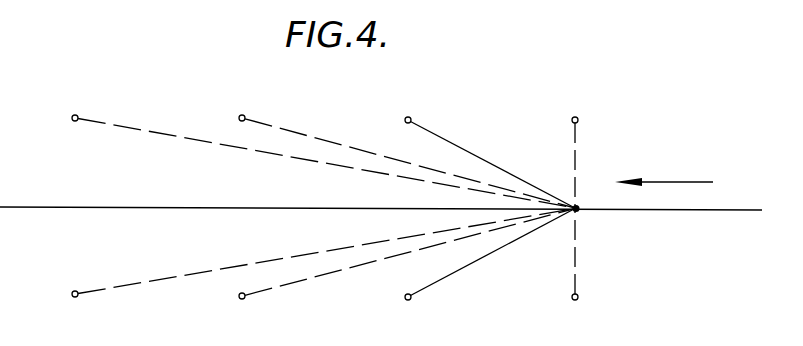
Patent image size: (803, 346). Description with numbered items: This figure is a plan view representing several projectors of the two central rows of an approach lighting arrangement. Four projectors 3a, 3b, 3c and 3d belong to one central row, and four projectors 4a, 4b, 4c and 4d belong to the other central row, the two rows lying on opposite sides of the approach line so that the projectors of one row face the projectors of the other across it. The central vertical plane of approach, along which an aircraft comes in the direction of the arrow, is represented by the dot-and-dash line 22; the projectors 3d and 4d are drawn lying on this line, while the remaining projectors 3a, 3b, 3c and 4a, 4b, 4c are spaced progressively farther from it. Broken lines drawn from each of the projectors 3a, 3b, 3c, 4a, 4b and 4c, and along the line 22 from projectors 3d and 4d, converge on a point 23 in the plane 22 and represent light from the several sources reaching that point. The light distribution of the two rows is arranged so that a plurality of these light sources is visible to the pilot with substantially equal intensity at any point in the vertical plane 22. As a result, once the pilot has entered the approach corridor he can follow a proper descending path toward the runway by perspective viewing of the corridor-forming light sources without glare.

The projector 3a is at (76, 115).
The projector 3b is at (242, 115).
The projector 3c is at (408, 117).
The projector 3d is at (576, 117).
The projector 4a is at (75, 297).
The projector 4b is at (242, 299).
The projector 4c is at (407, 300).
The projector 4d is at (574, 300).
The central vertical plane of approach 22 is at (603, 212).
The point in plane 22 23 is at (579, 207).